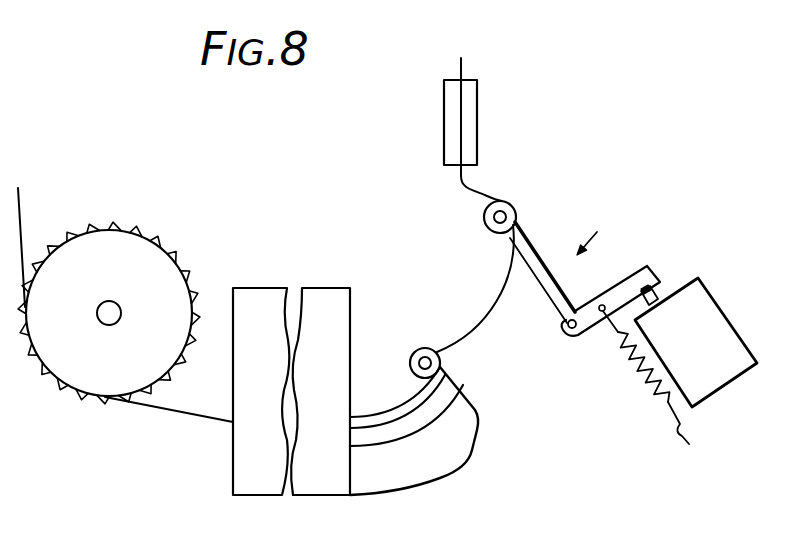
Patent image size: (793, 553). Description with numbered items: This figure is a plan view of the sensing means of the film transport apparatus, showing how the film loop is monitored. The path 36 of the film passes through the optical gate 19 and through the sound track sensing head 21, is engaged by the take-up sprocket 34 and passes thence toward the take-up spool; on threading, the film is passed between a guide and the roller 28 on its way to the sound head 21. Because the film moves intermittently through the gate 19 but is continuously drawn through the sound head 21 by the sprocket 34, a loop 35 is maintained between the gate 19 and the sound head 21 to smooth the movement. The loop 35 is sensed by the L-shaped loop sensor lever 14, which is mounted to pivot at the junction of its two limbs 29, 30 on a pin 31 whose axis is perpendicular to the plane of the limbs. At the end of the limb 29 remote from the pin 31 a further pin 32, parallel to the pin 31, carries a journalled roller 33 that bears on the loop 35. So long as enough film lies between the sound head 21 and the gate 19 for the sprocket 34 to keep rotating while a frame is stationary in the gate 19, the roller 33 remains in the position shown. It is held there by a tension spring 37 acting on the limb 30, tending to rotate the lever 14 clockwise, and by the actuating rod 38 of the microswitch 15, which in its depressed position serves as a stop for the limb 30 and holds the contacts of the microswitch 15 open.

The film loop sensor lever 14 is at (602, 227).
The microswitch 15 is at (725, 388).
The optical gate 19 is at (478, 97).
The sound track sensing head 21 is at (233, 448).
The roller 28 is at (425, 348).
The limb 29 is at (507, 235).
The limb 30 is at (643, 272).
The pin 31 is at (567, 325).
The pin 32 is at (494, 222).
The roller 33 is at (484, 215).
The take-up sprocket 34 is at (190, 335).
The loop 35 is at (481, 338).
The path 36 is at (20, 207).
The tension spring 37 is at (624, 357).
The actuating rod 38 is at (652, 302).